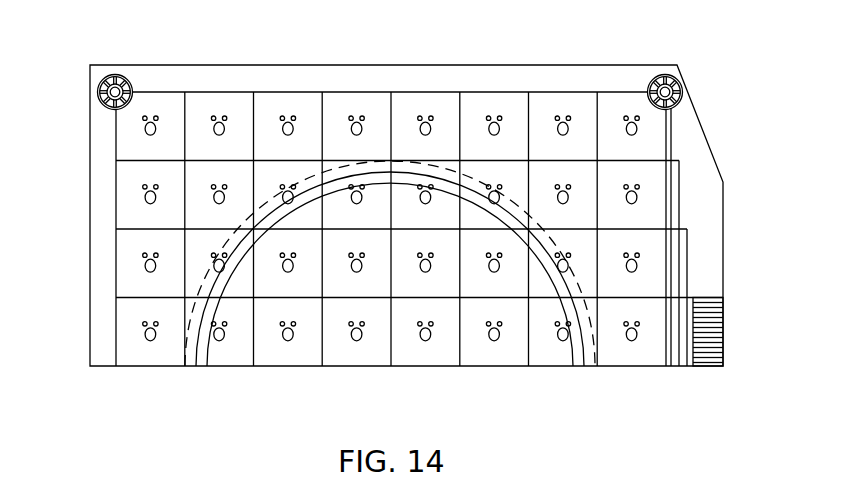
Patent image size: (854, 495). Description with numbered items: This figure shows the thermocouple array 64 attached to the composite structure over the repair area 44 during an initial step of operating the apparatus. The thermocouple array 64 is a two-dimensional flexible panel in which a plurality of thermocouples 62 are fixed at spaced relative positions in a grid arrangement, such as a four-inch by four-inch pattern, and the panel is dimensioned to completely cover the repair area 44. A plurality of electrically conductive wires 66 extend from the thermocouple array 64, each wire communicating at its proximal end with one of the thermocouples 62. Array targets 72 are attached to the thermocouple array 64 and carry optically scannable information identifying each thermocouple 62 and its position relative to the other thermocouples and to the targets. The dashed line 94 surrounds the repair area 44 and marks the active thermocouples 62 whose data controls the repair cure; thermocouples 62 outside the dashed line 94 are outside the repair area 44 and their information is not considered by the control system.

The repair area 44 is at (577, 279).
The thermocouple 62 is at (425, 122).
The thermocouple array 64 is at (555, 65).
The electrically conductive wire 66 is at (710, 297).
The array target 72 is at (104, 80).
The dashed line 94 is at (190, 312).